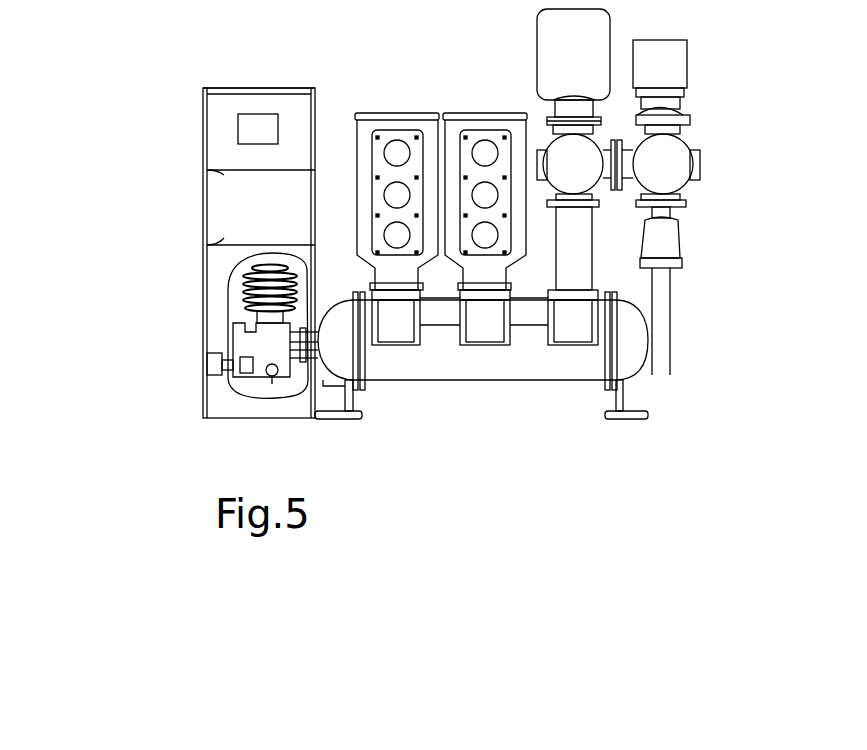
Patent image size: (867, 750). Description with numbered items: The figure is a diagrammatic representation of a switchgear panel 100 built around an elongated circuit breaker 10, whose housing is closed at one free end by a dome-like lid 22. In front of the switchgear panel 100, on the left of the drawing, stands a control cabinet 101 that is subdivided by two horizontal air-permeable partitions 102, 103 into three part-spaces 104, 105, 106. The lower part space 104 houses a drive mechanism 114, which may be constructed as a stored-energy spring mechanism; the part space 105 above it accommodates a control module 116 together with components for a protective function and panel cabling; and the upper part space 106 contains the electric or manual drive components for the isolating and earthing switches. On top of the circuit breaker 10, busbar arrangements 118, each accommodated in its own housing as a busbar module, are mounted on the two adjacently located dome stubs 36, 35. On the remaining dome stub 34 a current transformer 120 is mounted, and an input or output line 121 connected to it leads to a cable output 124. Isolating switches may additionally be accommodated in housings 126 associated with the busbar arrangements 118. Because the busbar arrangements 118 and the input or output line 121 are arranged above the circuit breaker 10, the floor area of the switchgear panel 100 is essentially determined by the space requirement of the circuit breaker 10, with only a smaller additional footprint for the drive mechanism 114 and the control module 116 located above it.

The circuit breaker 10 is at (528, 358).
The dome-like lid 22 is at (545, 35).
The dome stub 34 is at (557, 298).
The dome stub 35 is at (467, 298).
The dome stub 36 is at (365, 300).
The switchgear panel 100 is at (474, 431).
The control cabinet 101 is at (183, 292).
The horizontal air-permeable partition 102 is at (222, 244).
The horizontal air-permeable partition 103 is at (232, 170).
The lower part space 104 is at (217, 387).
The part space 105 is at (222, 206).
The part space 106 is at (257, 98).
The drive mechanism 114 is at (255, 378).
The control module 116 is at (210, 145).
The busbar arrangement 118 is at (367, 112).
The current transformer 120 is at (580, 246).
The input or output line 121 is at (682, 117).
The cable output 124 is at (660, 252).
The housing 126 is at (577, 162).